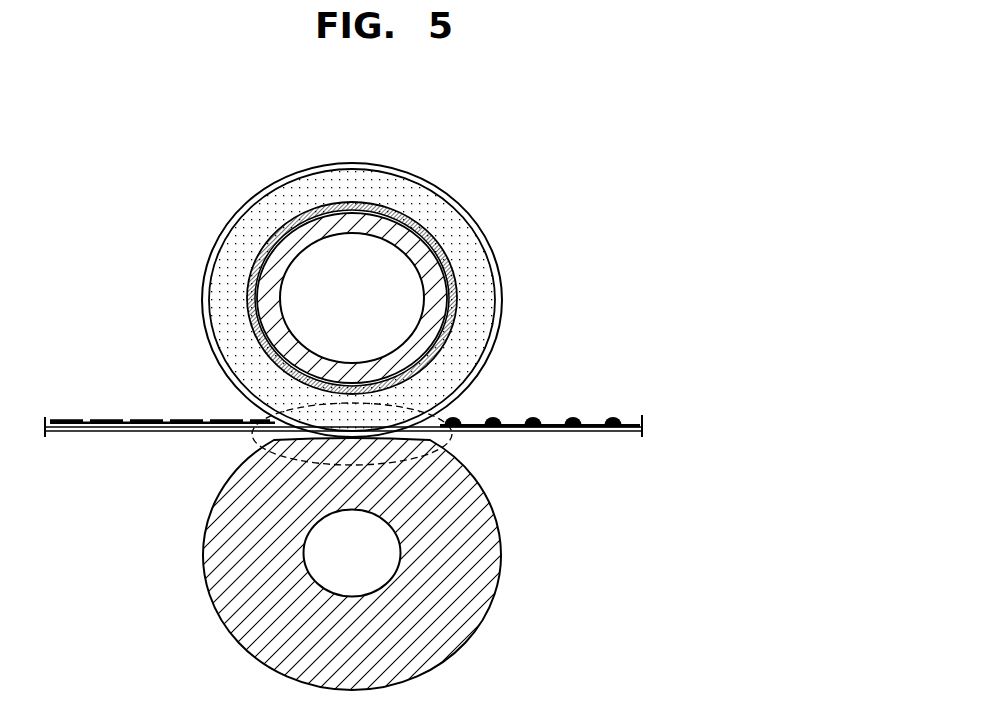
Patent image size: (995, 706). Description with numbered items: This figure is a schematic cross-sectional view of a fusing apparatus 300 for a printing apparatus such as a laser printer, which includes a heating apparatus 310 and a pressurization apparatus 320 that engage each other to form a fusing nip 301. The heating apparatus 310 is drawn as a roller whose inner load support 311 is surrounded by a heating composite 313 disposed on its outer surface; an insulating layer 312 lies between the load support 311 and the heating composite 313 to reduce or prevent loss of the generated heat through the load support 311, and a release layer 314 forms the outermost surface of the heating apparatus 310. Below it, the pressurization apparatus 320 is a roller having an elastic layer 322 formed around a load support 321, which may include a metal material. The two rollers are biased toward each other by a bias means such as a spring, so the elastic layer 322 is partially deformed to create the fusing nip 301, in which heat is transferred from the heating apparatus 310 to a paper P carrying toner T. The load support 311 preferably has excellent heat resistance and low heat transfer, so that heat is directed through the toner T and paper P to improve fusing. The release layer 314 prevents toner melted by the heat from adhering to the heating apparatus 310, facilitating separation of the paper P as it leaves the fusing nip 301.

The fusing apparatus 300 is at (383, 388).
The heating apparatus 310 is at (376, 300).
The load support 311 is at (403, 235).
The insulating layer 312 is at (455, 293).
The heating composite 313 is at (470, 270).
The release layer 314 is at (487, 235).
The fusing nip 301 is at (458, 443).
The pressurization apparatus 320 is at (377, 565).
The load support 321 is at (393, 530).
The elastic layer 322 is at (498, 585).
The toner T is at (618, 413).
The paper P is at (605, 430).